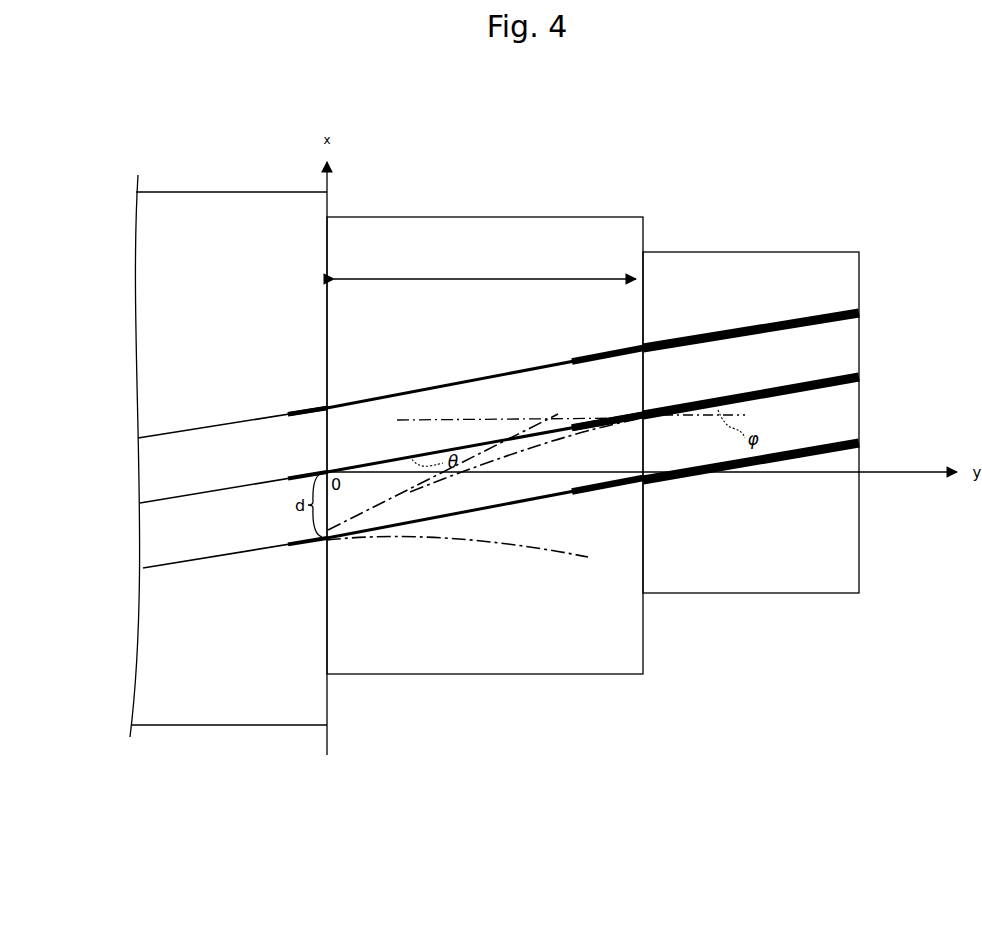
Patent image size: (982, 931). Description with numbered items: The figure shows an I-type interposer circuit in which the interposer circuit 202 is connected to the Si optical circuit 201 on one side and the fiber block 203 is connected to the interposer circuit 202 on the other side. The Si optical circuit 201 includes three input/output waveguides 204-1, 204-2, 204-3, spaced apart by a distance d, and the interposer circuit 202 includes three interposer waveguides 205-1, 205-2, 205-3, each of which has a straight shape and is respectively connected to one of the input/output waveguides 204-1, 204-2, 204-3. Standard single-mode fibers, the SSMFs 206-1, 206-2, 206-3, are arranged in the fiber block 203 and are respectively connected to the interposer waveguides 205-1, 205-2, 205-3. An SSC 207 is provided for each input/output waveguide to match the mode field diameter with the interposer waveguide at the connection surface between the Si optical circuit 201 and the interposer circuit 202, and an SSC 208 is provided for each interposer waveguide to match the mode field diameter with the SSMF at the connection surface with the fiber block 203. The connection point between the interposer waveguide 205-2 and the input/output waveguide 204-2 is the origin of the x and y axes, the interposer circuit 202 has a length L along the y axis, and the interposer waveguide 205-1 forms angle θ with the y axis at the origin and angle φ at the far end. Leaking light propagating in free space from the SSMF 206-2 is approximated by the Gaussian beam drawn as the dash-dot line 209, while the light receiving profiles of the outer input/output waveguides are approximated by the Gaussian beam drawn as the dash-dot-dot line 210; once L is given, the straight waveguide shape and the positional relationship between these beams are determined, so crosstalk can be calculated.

The Si optical circuit 201 is at (222, 207).
The interposer circuit 202 is at (457, 216).
The fiber block 203 is at (751, 262).
The input/output waveguide 204-1 is at (225, 423).
The input/output waveguide 204-2 is at (225, 488).
The input/output waveguide 204-3 is at (225, 553).
The interposer waveguide 205-1 is at (443, 384).
The interposer waveguide 205-2 is at (385, 461).
The interposer waveguide 205-3 is at (520, 500).
The SSMF 206-1 is at (810, 321).
The SSMF 206-2 is at (810, 385).
The SSMF 206-3 is at (810, 450).
The SSC 207 is at (312, 403).
The SSC 208 is at (625, 412).
The dash-dot line 209 is at (535, 414).
The dash-dot-dot line 210 is at (540, 553).